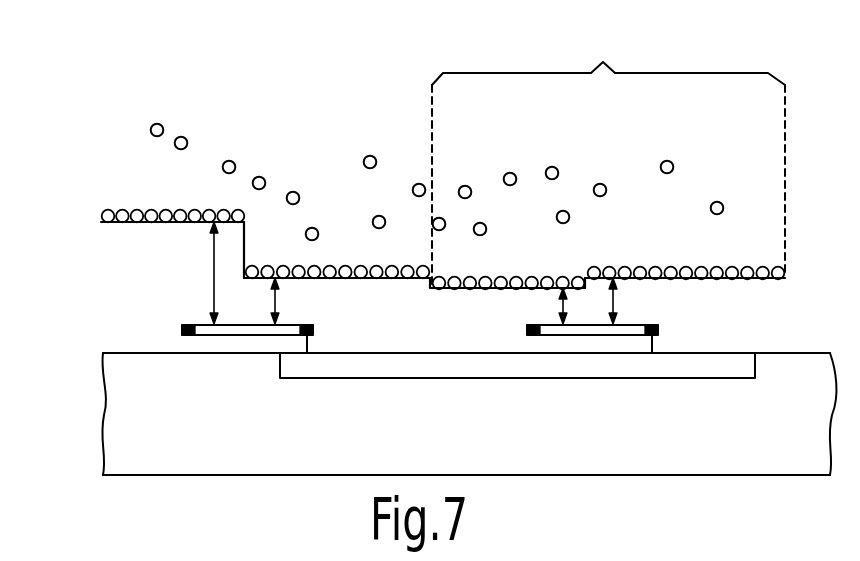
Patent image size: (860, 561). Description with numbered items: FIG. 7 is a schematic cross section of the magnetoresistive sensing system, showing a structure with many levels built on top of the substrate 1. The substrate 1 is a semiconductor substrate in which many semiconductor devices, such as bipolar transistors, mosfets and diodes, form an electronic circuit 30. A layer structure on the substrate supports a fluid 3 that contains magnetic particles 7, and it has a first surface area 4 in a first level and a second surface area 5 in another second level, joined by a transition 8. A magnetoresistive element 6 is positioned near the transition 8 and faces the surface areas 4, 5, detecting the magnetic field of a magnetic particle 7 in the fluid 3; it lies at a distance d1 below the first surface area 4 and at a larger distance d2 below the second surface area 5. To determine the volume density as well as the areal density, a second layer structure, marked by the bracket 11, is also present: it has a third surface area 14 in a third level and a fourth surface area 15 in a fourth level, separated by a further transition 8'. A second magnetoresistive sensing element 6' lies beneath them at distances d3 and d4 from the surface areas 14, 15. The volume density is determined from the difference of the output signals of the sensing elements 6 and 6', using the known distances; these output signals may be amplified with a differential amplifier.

The substrate 1 is at (133, 430).
The fluid 3 is at (117, 137).
The first surface area 4 is at (362, 280).
The second surface area 5 is at (118, 224).
The magnetoresistive element 6 is at (247, 373).
The magnetoresistive sensing element 6' is at (592, 373).
The magnetic particle 7 is at (370, 155).
The transition 8 is at (260, 238).
The step 8' is at (565, 258).
The deposition region 11 is at (617, 54).
The plate segment 14 is at (465, 290).
The plate segment 15 is at (760, 280).
The electronic circuit 30 is at (562, 369).
The distance d1 is at (292, 301).
The distance d2 is at (194, 273).
The distance d3 is at (549, 307).
The distance d4 is at (630, 301).